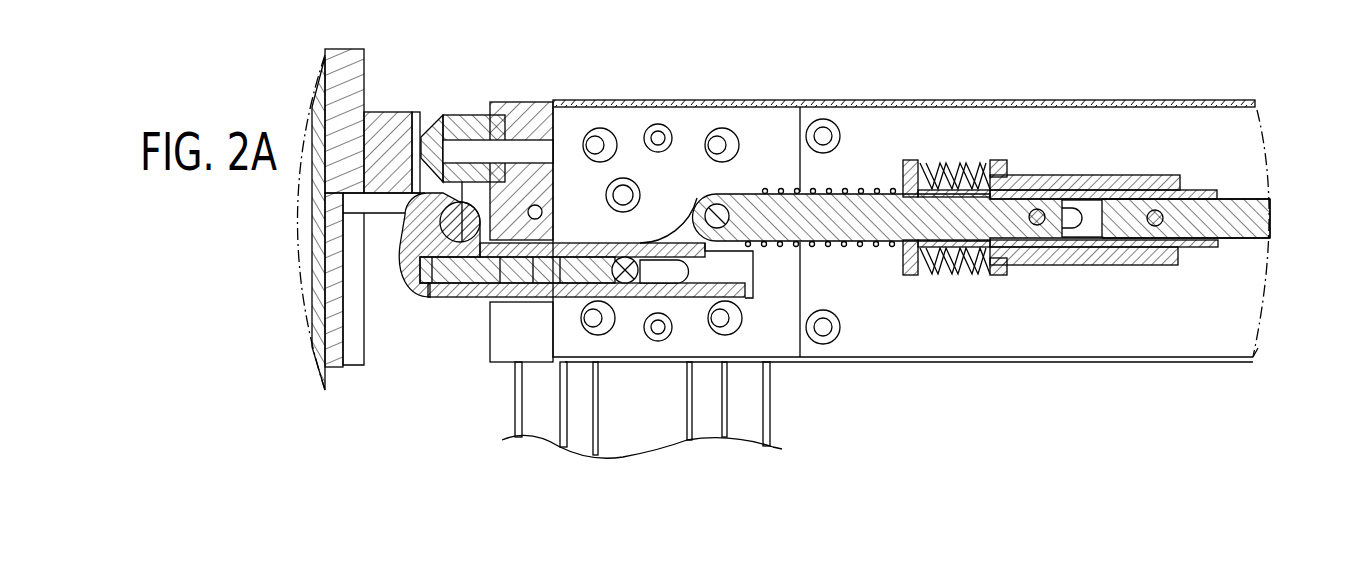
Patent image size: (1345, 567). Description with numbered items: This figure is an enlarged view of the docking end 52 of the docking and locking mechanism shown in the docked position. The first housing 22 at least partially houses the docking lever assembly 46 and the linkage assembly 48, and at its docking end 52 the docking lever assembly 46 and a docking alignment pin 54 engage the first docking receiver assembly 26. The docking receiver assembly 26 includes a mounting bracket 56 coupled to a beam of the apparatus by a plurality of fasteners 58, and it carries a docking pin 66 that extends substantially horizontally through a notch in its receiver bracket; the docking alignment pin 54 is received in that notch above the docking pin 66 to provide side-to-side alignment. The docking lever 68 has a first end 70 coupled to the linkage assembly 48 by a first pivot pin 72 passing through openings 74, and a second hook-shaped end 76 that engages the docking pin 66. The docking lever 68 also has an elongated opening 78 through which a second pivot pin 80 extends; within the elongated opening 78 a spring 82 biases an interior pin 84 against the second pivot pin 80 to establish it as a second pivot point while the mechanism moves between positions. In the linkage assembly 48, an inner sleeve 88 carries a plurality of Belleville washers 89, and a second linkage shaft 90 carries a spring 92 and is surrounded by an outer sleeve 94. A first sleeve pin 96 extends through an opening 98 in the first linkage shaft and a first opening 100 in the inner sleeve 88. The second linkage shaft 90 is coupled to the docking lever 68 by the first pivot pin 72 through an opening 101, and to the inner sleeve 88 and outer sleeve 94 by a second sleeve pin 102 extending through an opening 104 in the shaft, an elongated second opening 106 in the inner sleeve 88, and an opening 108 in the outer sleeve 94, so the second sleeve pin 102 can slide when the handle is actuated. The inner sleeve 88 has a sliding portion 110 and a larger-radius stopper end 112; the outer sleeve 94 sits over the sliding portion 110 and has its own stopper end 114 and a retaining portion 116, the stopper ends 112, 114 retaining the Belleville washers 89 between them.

The first housing 22 is at (647, 100).
The first docking receiver assembly 26 is at (380, 83).
The docking lever assembly 46 is at (758, 299).
The linkage assembly 48 is at (1215, 150).
The docking end 52 is at (483, 349).
The docking alignment pin 54 is at (442, 128).
The mounting bracket 56 is at (347, 48).
The fasteners 58 is at (390, 112).
The docking pin 66 is at (458, 230).
The docking lever 68 is at (524, 303).
The first end 70 is at (768, 267).
The first pivot pin 72 is at (711, 217).
The openings 74 is at (681, 136).
The second hook-shaped end 76 is at (394, 266).
The elongated opening 78 is at (694, 272).
The second pivot pin 80 is at (621, 284).
The spring 82 is at (442, 284).
The interior pin 84 is at (572, 275).
The inner sleeve 88 is at (1122, 281).
The Belleville washers 89 is at (955, 151).
The second linkage shaft 90 is at (863, 220).
The spring 92 is at (815, 190).
The outer sleeve 94 is at (1084, 297).
The first sleeve pin 96 is at (1166, 222).
The opening 98 is at (1192, 118).
The first opening 100 is at (1157, 206).
The opening 101 is at (711, 192).
The second sleeve pin 102 is at (1047, 224).
The opening 104 is at (1060, 120).
The second opening 106 is at (1084, 211).
The opening 108 is at (1037, 197).
The sliding portion 110 is at (1197, 248).
The stopper end 112 is at (912, 276).
The stopper end 114 is at (997, 276).
The retaining portion 116 is at (1110, 266).